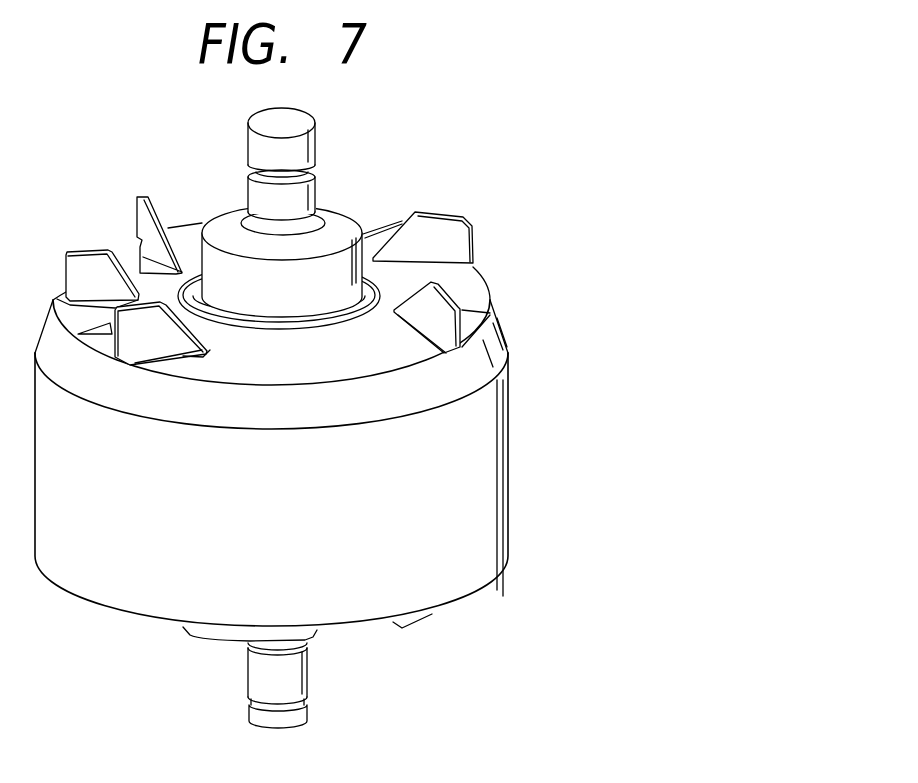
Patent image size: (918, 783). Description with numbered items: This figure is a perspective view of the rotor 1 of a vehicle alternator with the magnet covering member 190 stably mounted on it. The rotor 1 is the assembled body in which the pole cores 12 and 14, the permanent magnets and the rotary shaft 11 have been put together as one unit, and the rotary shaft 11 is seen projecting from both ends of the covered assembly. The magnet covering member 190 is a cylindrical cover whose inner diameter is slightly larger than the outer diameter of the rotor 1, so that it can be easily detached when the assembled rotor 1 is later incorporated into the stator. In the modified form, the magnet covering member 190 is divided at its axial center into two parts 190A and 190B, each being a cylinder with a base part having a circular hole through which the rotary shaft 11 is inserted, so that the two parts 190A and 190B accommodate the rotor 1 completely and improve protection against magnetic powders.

The rotor 1 is at (401, 418).
The pole core 12 is at (401, 418).
The pole core 14 is at (401, 418).
The rotary shaft 11 is at (305, 145).
The magnet covering member 190 is at (401, 454).
The part of magnet covering member 190A is at (401, 454).
The part of magnet covering member 190B is at (482, 491).